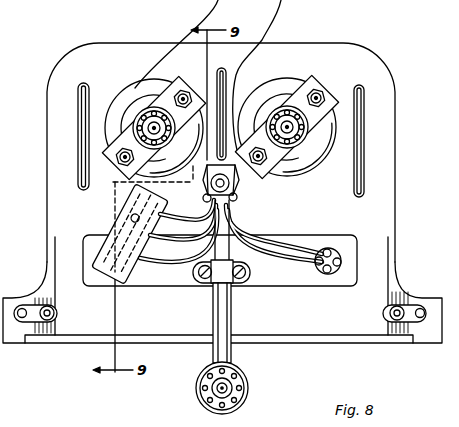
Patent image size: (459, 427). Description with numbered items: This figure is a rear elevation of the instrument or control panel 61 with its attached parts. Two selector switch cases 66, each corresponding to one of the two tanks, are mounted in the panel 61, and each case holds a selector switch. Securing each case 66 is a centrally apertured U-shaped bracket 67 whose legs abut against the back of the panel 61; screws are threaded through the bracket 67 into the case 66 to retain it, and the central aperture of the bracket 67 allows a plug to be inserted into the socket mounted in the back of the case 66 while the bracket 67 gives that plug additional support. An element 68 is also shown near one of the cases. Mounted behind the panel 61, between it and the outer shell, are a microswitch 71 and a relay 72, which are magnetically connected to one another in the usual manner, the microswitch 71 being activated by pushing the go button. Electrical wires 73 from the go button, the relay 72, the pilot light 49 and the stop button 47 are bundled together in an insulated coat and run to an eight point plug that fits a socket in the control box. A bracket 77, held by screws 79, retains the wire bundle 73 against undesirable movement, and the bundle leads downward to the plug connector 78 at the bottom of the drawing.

The instrument or control panel or board 61 is at (103, 64).
The selector switch case 66 is at (178, 80).
The U-shaped bracket 67 is at (337, 85).
The bearing 68 is at (293, 110).
The pilot light 49 is at (237, 180).
The "stop" button 47 is at (337, 250).
The electrical wires 73 is at (235, 240).
The microswitch 71 is at (100, 236).
The relay 72 is at (124, 220).
The bracket 77 is at (225, 290).
The screws 79 is at (218, 290).
The plug connector 78 is at (247, 388).